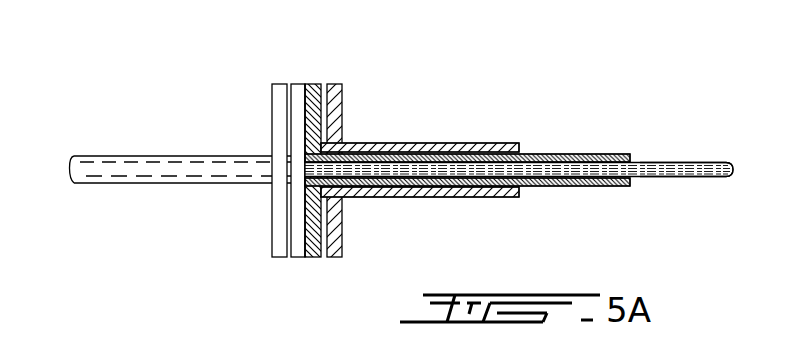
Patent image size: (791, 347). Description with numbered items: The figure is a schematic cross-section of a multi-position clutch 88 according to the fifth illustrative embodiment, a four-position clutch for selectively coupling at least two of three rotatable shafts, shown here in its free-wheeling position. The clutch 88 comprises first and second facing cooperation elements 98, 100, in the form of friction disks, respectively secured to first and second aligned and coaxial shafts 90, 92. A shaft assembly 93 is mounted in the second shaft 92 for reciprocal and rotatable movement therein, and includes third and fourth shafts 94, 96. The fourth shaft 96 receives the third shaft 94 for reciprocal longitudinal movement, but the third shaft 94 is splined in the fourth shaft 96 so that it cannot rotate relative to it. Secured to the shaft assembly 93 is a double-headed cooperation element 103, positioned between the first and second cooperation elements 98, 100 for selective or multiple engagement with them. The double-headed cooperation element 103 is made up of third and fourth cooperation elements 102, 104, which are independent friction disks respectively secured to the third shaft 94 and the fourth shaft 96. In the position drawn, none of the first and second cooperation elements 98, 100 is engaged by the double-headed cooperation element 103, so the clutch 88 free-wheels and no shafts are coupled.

The multi-position clutch 88 is at (146, 58).
The first shaft 90 is at (136, 166).
The second shaft 92 is at (460, 148).
The shaft assembly 93 is at (637, 148).
The third shaft 94 is at (694, 165).
The fourth shaft 96 is at (588, 158).
The first cooperation element 98 is at (276, 94).
The second cooperation element 100 is at (336, 110).
The third cooperation element 102 is at (313, 88).
The double-headed cooperation element 103 is at (300, 270).
The fourth cooperation element 104 is at (300, 87).